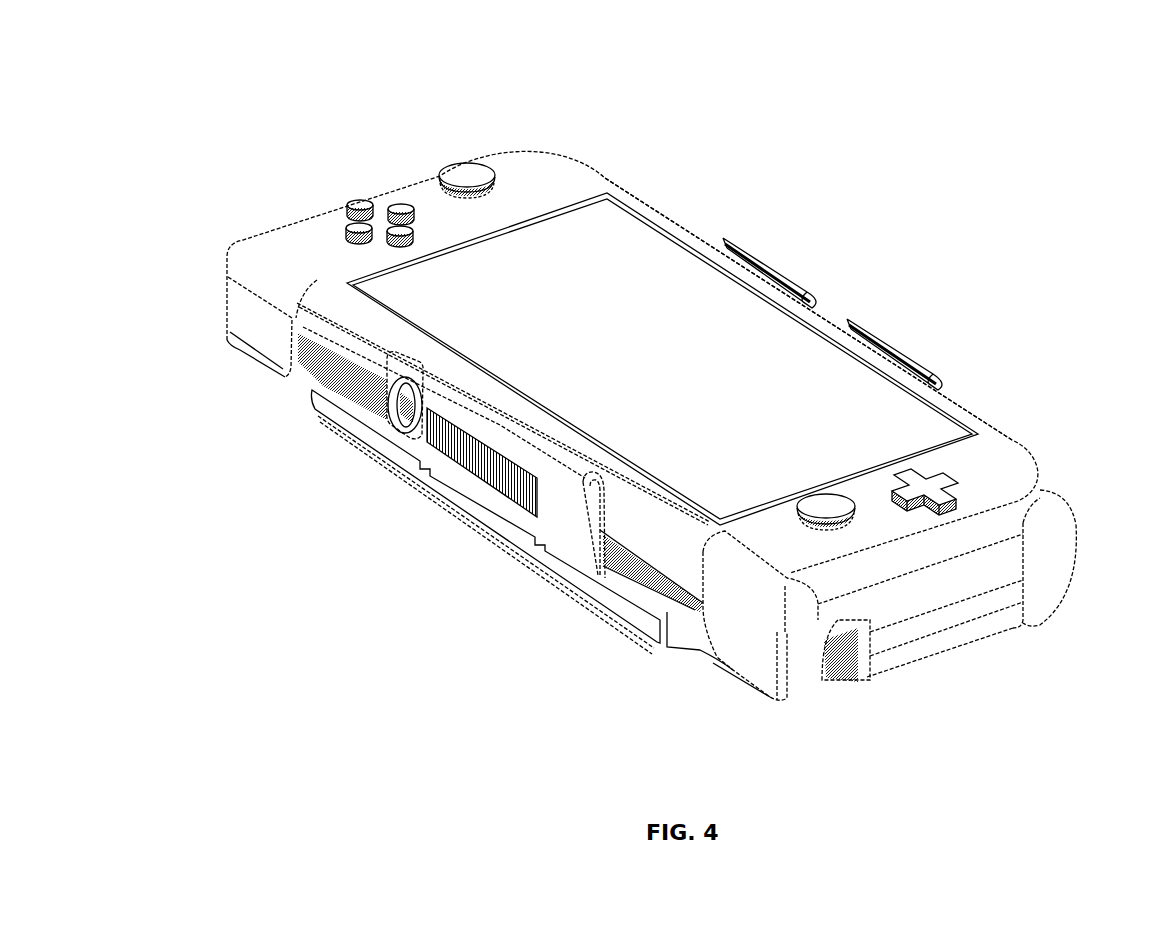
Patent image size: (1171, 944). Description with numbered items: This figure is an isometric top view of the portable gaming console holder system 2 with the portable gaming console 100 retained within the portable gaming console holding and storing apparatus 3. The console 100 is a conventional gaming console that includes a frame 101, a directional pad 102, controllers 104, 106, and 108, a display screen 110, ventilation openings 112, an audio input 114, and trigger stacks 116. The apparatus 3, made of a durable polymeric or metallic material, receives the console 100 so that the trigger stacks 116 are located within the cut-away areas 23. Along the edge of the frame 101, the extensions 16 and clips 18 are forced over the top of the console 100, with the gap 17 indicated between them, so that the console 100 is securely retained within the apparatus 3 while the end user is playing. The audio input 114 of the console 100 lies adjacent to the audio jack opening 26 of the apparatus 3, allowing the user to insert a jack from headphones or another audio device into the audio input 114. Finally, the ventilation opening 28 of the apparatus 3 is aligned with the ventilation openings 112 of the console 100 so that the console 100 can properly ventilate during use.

The portable gaming console 100 is at (603, 144).
The portable gaming console holder system 2 is at (950, 213).
The portable gaming console holding and storing apparatus 3 is at (1040, 640).
The extension 16 is at (785, 266).
The clip gap 17 is at (853, 298).
The clip 18 is at (724, 228).
The cut-away areas 23 is at (292, 405).
The audio jack opening 26 is at (400, 437).
The ventilation opening 28 is at (483, 477).
The frame 101 is at (837, 325).
The directional pad 102 is at (938, 478).
The controller 104 is at (833, 508).
The controller 106 is at (465, 176).
The controller 108 is at (340, 194).
The display screen 110 is at (662, 359).
The ventilation openings 112 is at (490, 545).
The audio input 114 is at (390, 420).
The trigger stacks 116 is at (260, 333).